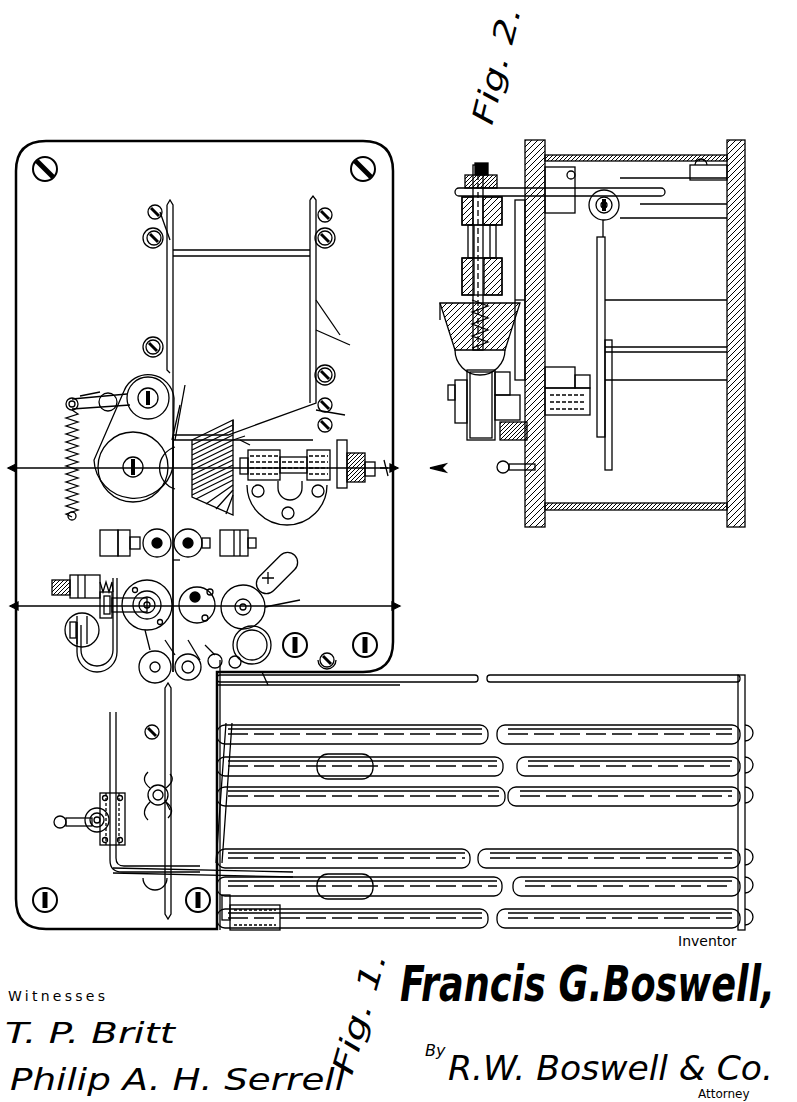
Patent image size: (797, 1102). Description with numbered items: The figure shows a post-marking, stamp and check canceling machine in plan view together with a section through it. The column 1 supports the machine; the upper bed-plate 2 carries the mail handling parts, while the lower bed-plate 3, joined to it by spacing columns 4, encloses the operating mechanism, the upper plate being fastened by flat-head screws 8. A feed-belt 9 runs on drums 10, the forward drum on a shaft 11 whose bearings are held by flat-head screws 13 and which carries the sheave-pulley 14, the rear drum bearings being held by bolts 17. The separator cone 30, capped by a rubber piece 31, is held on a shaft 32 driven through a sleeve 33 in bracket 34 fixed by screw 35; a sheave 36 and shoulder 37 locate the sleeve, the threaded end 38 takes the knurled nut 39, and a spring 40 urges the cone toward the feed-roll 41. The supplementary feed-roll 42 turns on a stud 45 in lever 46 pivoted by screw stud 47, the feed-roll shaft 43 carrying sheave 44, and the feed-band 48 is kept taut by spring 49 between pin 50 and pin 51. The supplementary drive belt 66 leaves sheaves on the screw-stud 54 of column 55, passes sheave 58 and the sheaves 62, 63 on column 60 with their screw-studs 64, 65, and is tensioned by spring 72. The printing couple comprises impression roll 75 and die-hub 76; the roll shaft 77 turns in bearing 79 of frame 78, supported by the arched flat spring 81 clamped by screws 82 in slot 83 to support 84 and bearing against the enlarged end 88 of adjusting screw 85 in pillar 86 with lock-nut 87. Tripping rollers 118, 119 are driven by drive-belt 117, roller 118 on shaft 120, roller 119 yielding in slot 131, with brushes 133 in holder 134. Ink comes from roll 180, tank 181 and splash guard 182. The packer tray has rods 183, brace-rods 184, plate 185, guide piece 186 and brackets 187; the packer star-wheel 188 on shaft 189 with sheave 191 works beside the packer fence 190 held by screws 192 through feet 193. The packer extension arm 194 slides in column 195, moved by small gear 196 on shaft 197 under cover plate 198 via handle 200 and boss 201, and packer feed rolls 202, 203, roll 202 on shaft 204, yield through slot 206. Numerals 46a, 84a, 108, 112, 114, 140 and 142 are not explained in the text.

In FIG. 1, the column 1 is at (182, 556).
In FIG. 1, the upper bed-plate 2 is at (204, 462).
In FIG. 2, the lower bed-plate 3 is at (737, 528).
In FIG. 1, the spacing columns 4 is at (205, 600).
In FIG. 1, the flat-head screws 8 is at (58, 168).
In FIG. 1, the feed-belt 9 is at (241, 434).
In FIG. 2, the drums 10 is at (666, 387).
In FIG. 2, the shaft 11 is at (560, 214).
In FIG. 1, the flat-head screws 13 is at (189, 406).
In FIG. 1, the sheave-pulley 14 is at (181, 450).
In FIG. 2, the sheave-pulley 14 is at (556, 186).
In FIG. 1, the bolts 17 is at (155, 206).
In FIG. 1, the separator cone 30 is at (227, 410).
In FIG. 2, the separator cone 30 is at (426, 313).
In FIG. 1, the globular-shaped rubber piece 31 is at (240, 430).
In FIG. 2, the globular-shaped rubber piece 31 is at (452, 345).
In FIG. 1, the shaft 32 is at (322, 485).
In FIG. 1, the sleeve 33 is at (301, 476).
In FIG. 2, the sleeve 33 is at (468, 232).
In FIG. 1, the bracket 34 is at (287, 503).
In FIG. 2, the bracket 34 is at (484, 182).
In FIG. 1, the screw 35 is at (305, 505).
In FIG. 2, the screw 35 is at (534, 307).
In FIG. 1, the sheave 36 is at (354, 452).
In FIG. 2, the sheave 36 is at (462, 205).
In FIG. 2, the shoulder 37 is at (464, 197).
In FIG. 1, the threaded end 38 is at (374, 475).
In FIG. 2, the threaded end 38 is at (472, 164).
In FIG. 1, the knurled nut 39 is at (376, 445).
In FIG. 2, the knurled nut 39 is at (462, 275).
In FIG. 1, the spring 40 is at (241, 416).
In FIG. 2, the spring 40 is at (473, 276).
In FIG. 1, the feed-roll 41 is at (120, 456).
In FIG. 1, the supplementary feed-roll 42 is at (134, 428).
In FIG. 1, the shaft 43 is at (220, 402).
In FIG. 2, the shaft 43 is at (514, 405).
In FIG. 1, the sheave 44 is at (102, 390).
In FIG. 2, the sheave 44 is at (444, 406).
In FIG. 1, the stud 45 is at (108, 388).
In FIG. 2, the stud 45 is at (503, 454).
In FIG. 1, the lever 46 is at (211, 399).
In FIG. 2, the lever 46 is at (500, 440).
In FIG. 1, the bracket arm 46a is at (256, 410).
In FIG. 1, the screw stud 47 is at (90, 386).
In FIG. 1, the feed-band 48 is at (146, 234).
In FIG. 1, the spring 49 is at (65, 463).
In FIG. 1, the pin 50 is at (64, 504).
In FIG. 2, the pin 50 is at (508, 474).
In FIG. 1, the pin 51 is at (62, 394).
In FIG. 2, the headed screw-stud 54 is at (596, 300).
In FIG. 2, the column 55 is at (650, 345).
In FIG. 2, the sheave 58 is at (567, 362).
In FIG. 2, the column 60 is at (655, 156).
In FIG. 2, the sheave 62 is at (621, 227).
In FIG. 2, the sheave 63 is at (673, 173).
In FIG. 2, the screw-stud 64 is at (612, 216).
In FIG. 2, the screw-stud 65 is at (620, 178).
In FIG. 2, the supplementary drive belt 66 is at (590, 190).
In FIG. 1, the spring 72 is at (152, 640).
In FIG. 1, the impression roll 75 is at (131, 594).
In FIG. 1, the die-hub 76 is at (341, 339).
In FIG. 1, the shaft 77 is at (236, 352).
In FIG. 1, the frame 78 is at (238, 397).
In FIG. 1, the bearing 79 is at (327, 387).
In FIG. 1, the arched flat spring 81 is at (106, 625).
In FIG. 1, the screws 82 is at (101, 605).
In FIG. 1, the slot 83 is at (102, 616).
In FIG. 1, the support 84 is at (72, 642).
In FIG. 1, the pin 84a is at (57, 630).
In FIG. 1, the adjusting screw 85 is at (84, 575).
In FIG. 1, the pillar 86 is at (65, 577).
In FIG. 1, the lock-nut 87 is at (59, 588).
In FIG. 1, the enlarged end 88 is at (115, 577).
In FIG. 1, the arm 108 is at (184, 556).
In FIG. 1, the plate 112 is at (230, 540).
In FIG. 1, the wheel 114 is at (185, 533).
In FIG. 1, the drive-belt 117 is at (285, 580).
In FIG. 1, the tripping roller 118 is at (218, 546).
In FIG. 1, the tripping roller 119 is at (157, 530).
In FIG. 1, the shaft 120 is at (227, 536).
In FIG. 1, the slot 131 is at (177, 468).
In FIG. 1, the brushes 133 is at (122, 534).
In FIG. 1, the holder 134 is at (104, 530).
In FIG. 1, the cam 140 is at (195, 613).
In FIG. 1, the pin 142 is at (260, 539).
In FIG. 1, the roll 180 is at (246, 624).
In FIG. 1, the tank 181 is at (275, 651).
In FIG. 1, the splash guard 182 is at (268, 686).
In FIG. 1, the rods 183 is at (446, 812).
In FIG. 1, the brace-rods 184 is at (412, 755).
In FIG. 1, the plate 185 is at (738, 690).
In FIG. 1, the guide piece 186 is at (647, 676).
In FIG. 1, the brackets 187 is at (330, 686).
In FIG. 1, the packer star-wheel 188 is at (186, 801).
In FIG. 1, the shaft 189 is at (211, 850).
In FIG. 1, the packer fence 190 is at (158, 785).
In FIG. 1, the sheave 191 is at (165, 869).
In FIG. 1, the screws 192 is at (155, 801).
In FIG. 1, the feet 193 is at (146, 734).
In FIG. 1, the packer extension arm 194 is at (203, 856).
In FIG. 1, the column 195 is at (98, 810).
In FIG. 1, the small gear 196 is at (79, 836).
In FIG. 1, the shaft 197 is at (79, 809).
In FIG. 1, the cover plate 198 is at (89, 794).
In FIG. 1, the handle 200 is at (52, 812).
In FIG. 1, the boss 201 is at (143, 750).
In FIG. 1, the packer feed roll 202 is at (143, 672).
In FIG. 1, the packer feed roll 203 is at (208, 655).
In FIG. 1, the shaft 204 is at (194, 681).
In FIG. 1, the slot 206 is at (166, 679).